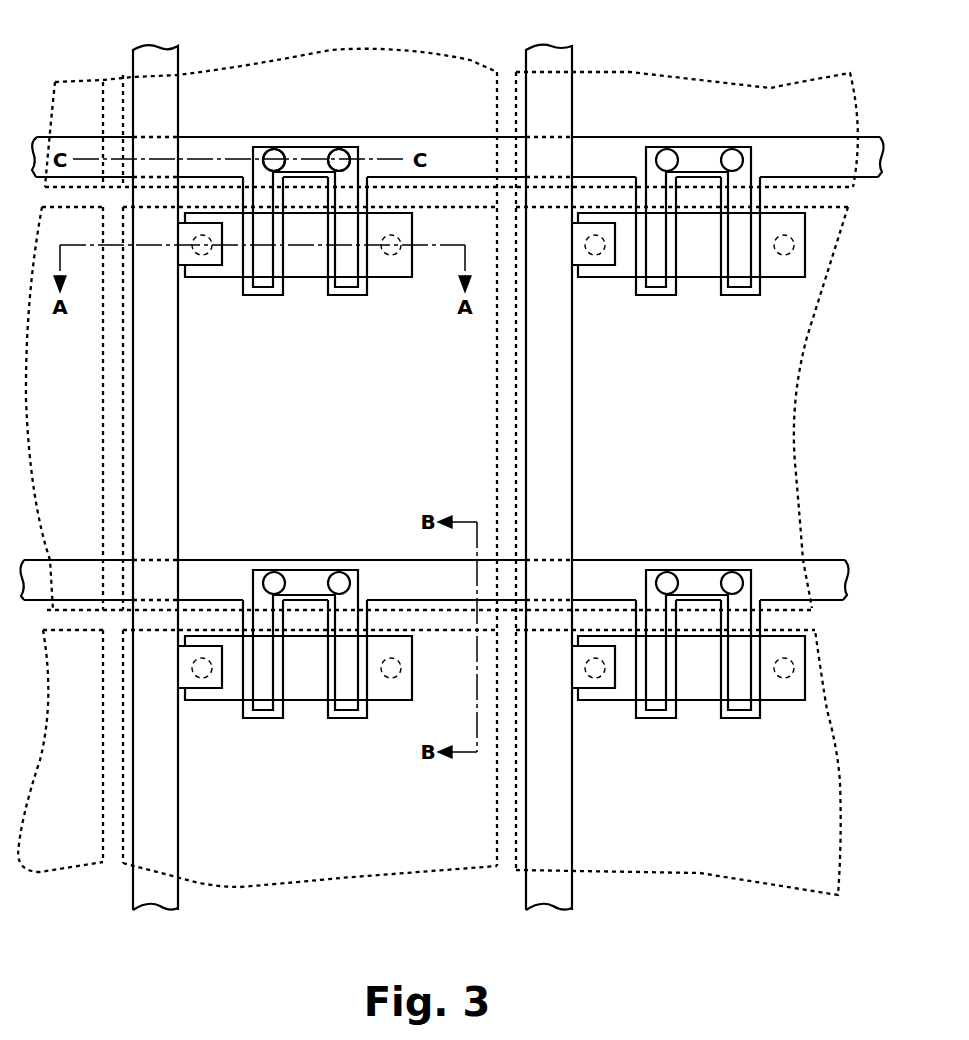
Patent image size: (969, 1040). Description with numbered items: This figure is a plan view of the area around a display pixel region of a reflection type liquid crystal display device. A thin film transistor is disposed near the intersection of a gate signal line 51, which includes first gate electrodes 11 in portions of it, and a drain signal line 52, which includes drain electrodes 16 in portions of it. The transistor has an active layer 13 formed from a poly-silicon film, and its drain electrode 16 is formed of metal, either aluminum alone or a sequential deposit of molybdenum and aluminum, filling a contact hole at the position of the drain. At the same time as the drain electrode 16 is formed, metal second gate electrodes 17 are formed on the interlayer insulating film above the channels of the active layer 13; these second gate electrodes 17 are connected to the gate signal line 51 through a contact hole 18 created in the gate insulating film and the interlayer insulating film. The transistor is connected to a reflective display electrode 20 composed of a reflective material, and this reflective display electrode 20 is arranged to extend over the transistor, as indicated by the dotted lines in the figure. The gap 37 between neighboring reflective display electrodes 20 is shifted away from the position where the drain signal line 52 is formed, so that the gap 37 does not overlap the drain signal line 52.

The first gate electrode 11 is at (280, 297).
The active layer 13 is at (402, 278).
The drain electrode 16 is at (205, 257).
The second gate electrode 17 is at (262, 288).
The contact hole 18 is at (275, 148).
The reflective display electrode 20 is at (500, 404).
The gap 37 is at (498, 364).
The gate signal line 51 is at (460, 148).
The drain signal line 52 is at (172, 463).